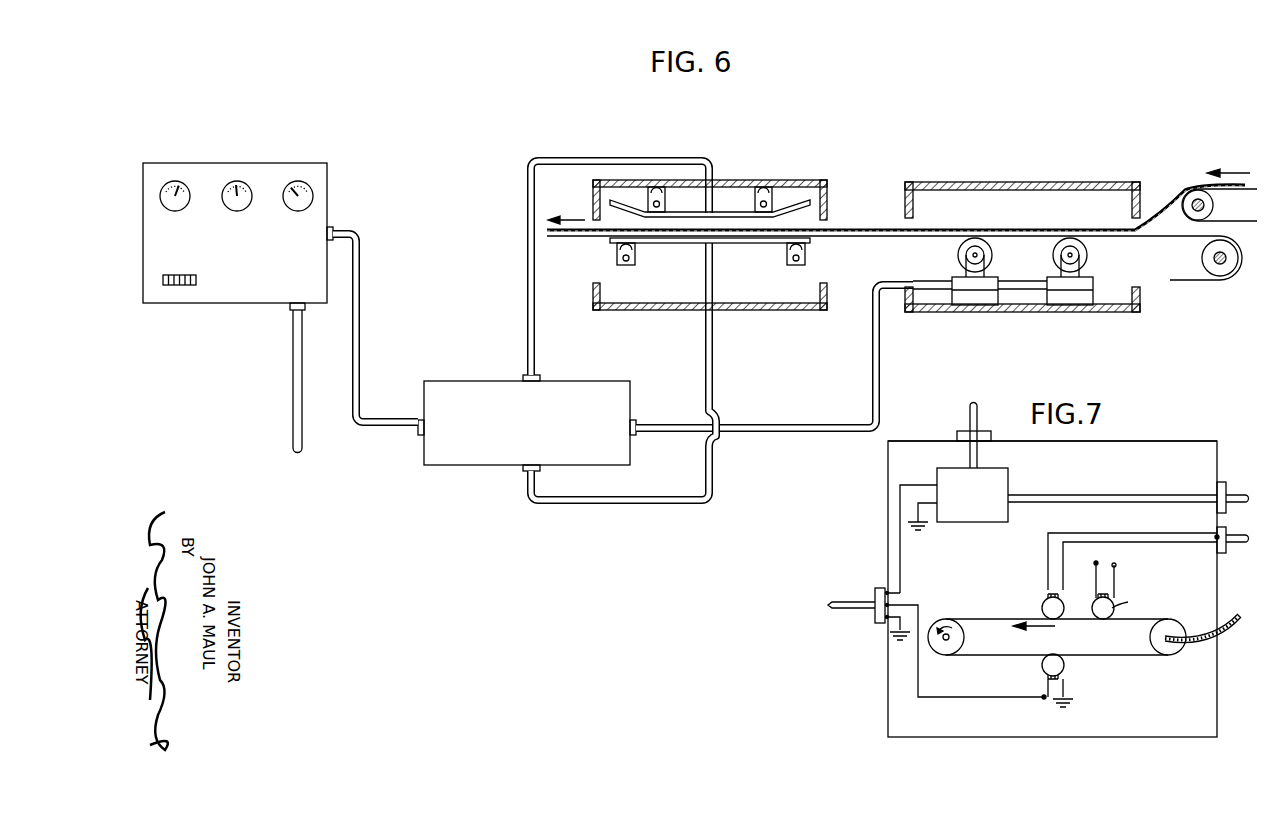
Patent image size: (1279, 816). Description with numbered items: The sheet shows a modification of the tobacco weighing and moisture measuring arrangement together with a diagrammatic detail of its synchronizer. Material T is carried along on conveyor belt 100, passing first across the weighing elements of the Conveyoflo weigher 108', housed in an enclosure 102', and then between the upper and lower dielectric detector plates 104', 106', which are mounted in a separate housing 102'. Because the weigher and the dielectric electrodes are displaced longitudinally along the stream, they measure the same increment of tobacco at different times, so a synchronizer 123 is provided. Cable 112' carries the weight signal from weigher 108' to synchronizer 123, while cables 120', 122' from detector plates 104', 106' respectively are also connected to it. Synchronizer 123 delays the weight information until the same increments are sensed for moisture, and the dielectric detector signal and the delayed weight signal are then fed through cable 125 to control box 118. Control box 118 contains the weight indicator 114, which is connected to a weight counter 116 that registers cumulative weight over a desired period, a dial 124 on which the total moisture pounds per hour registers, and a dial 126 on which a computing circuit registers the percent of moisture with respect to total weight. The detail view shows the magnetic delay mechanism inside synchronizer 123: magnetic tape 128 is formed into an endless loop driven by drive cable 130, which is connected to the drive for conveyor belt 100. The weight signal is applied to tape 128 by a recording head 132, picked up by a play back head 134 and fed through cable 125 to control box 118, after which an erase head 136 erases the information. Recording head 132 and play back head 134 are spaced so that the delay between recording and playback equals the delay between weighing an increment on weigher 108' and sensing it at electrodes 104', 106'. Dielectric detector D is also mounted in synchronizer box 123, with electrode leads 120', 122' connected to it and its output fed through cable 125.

In FIG. 6, the weight indicator 114 is at (168, 183).
In FIG. 6, the dial 124 is at (240, 183).
In FIG. 6, the dial 126 is at (300, 183).
In FIG. 6, the weight counter 116 is at (172, 288).
In FIG. 6, the control box 118 is at (248, 288).
In FIG. 6, the cable 125 is at (358, 318).
In FIG. 7, the cable 125 is at (855, 602).
In FIG. 6, the synchronizer 123 is at (480, 393).
In FIG. 7, the synchronizer 123 is at (918, 447).
In FIG. 6, the cable 120' is at (620, 248).
In FIG. 7, the cable 120' is at (956, 421).
In FIG. 6, the cable 122' is at (651, 371).
In FIG. 7, the cable 122' is at (1136, 480).
In FIG. 6, the cable 112' is at (774, 356).
In FIG. 7, the cable 112' is at (1155, 558).
In FIG. 6, the dielectric detector plate 104' is at (710, 229).
In FIG. 6, the dielectric detector plate 106' is at (710, 262).
In FIG. 6, the housing 102' is at (1022, 251).
In FIG. 6, the Conveyoflo weigher 108' is at (1003, 271).
In FIG. 6, the conveyor belt 100 is at (1178, 237).
In FIG. 6, the material T is at (863, 228).
In FIG. 7, the dielectric detector D is at (940, 476).
In FIG. 7, the magnetic tape 128 is at (995, 620).
In FIG. 7, the drive cable 130 is at (1225, 620).
In FIG. 7, the recording head 132 is at (1044, 603).
In FIG. 7, the play back head 134 is at (1065, 666).
In FIG. 7, the erase head 136 is at (1109, 605).